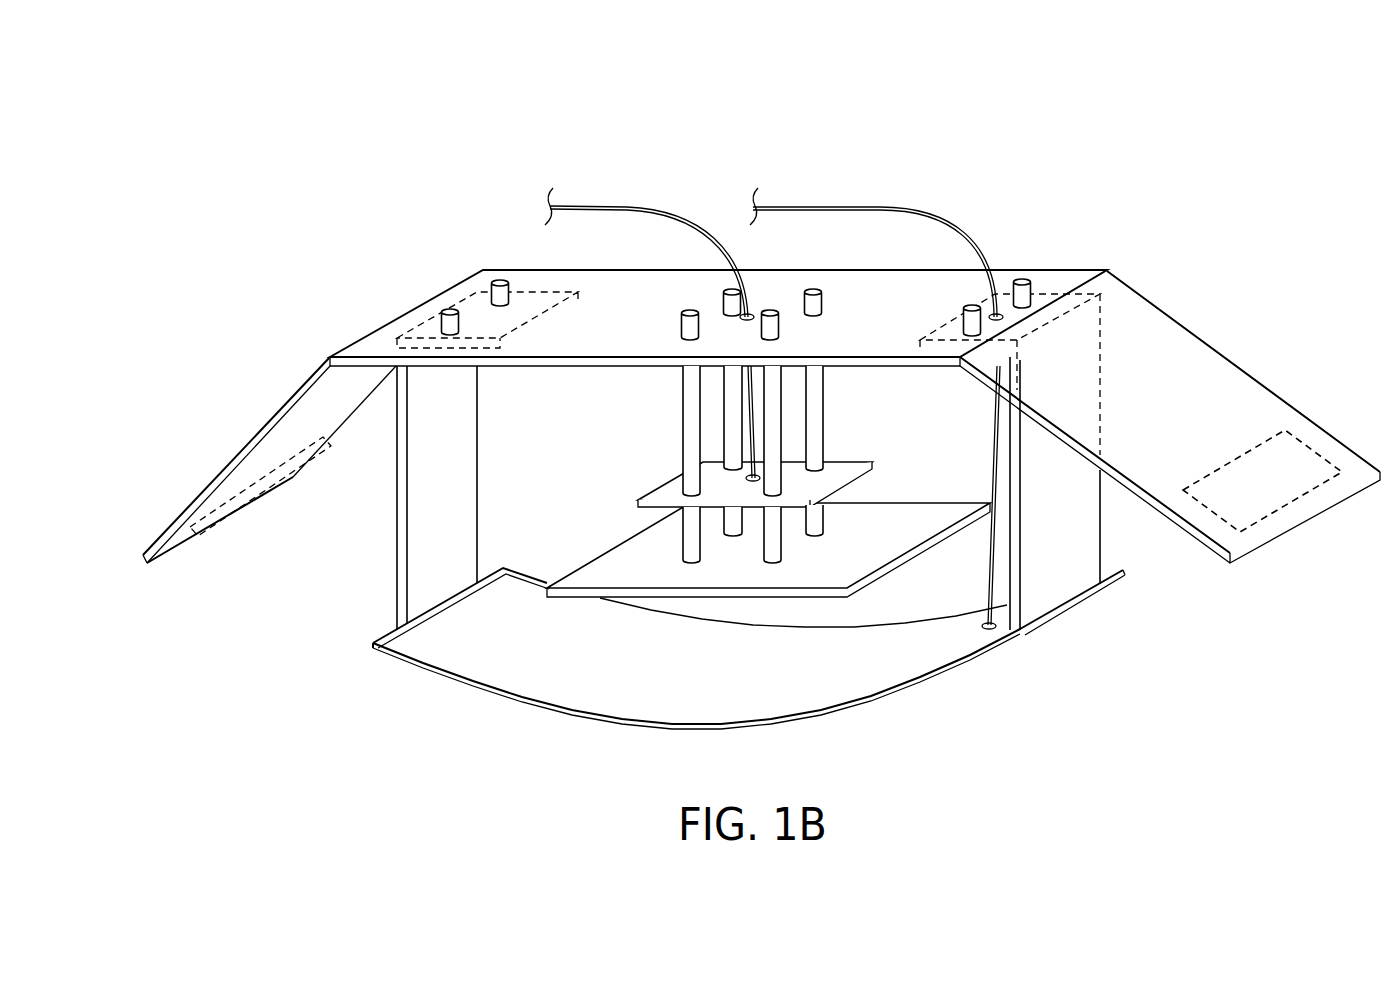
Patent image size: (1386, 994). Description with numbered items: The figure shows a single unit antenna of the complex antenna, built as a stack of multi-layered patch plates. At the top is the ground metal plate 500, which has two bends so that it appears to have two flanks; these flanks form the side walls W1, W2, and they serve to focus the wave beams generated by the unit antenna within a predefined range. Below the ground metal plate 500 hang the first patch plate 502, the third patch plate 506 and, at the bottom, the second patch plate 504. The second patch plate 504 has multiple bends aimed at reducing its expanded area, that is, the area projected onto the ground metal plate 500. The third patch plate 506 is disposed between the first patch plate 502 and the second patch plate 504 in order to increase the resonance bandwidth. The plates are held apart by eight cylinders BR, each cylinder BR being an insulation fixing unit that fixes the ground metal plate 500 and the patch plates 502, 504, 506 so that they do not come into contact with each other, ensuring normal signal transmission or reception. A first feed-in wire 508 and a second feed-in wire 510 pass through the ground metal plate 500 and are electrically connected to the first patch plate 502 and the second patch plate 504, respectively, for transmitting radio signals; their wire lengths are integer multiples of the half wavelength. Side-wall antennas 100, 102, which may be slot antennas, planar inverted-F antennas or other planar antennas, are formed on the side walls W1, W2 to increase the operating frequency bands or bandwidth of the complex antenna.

The side-wall antenna 100 is at (1307, 460).
The side-wall antenna 102 is at (264, 482).
The ground metal plate 500 is at (597, 300).
The first patch plate 502 is at (682, 487).
The second patch plate 504 is at (480, 663).
The third patch plate 506 is at (583, 578).
The first feed-in wire 508 is at (627, 207).
The second feed-in wire 510 is at (840, 205).
The cylinder BR is at (500, 283).
The side wall W1 is at (1232, 388).
The side wall W2 is at (283, 405).